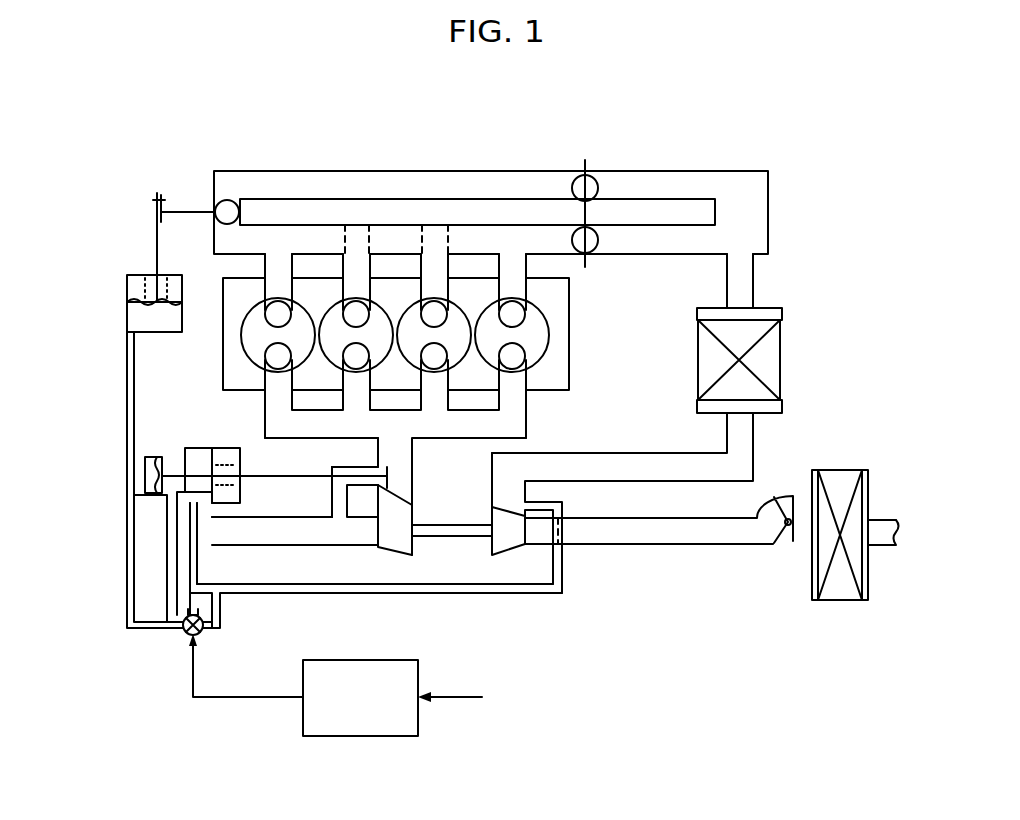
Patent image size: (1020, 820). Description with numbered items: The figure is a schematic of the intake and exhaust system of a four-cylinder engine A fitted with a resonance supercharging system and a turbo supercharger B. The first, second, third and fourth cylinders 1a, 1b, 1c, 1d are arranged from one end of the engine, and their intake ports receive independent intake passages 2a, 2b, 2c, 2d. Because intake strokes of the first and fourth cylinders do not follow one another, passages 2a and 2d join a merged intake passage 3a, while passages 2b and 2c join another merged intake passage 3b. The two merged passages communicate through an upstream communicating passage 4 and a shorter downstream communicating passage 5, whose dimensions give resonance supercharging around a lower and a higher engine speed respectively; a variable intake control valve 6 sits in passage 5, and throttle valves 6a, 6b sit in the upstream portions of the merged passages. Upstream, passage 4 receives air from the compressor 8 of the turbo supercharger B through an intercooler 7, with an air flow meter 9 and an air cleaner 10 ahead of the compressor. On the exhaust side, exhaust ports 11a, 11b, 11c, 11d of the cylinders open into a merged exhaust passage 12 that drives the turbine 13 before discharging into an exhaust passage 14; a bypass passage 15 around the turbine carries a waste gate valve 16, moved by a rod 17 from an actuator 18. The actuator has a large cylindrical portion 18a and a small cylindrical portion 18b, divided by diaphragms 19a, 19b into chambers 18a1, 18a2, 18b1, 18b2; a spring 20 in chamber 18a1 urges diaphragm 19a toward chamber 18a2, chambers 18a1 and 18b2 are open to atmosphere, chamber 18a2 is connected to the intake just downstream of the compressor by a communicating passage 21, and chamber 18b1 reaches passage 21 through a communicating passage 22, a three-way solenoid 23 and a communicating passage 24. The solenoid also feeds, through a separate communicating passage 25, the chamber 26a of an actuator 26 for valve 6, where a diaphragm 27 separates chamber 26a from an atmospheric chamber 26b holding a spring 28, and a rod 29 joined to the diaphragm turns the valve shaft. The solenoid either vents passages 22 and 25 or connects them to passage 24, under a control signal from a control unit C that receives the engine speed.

The four-cylinder engine A is at (462, 172).
The turbo supercharger B is at (468, 543).
The control unit C is at (357, 737).
The first cylinder 1a is at (260, 336).
The second cylinder 1b is at (338, 336).
The third cylinder 1c is at (416, 336).
The fourth cylinder 1d is at (494, 336).
The independent intake passage 2a is at (277, 267).
The independent intake passage 2b is at (355, 267).
The independent intake passage 2c is at (433, 267).
The independent intake passage 2d is at (511, 267).
The merged intake passage 3a is at (390, 233).
The merged intake passage 3b is at (383, 180).
The upstream communicating passage 4 is at (660, 240).
The downstream communicating passage 5 is at (214, 234).
The variable intake control valve 6 is at (232, 203).
The throttle valve 6a is at (188, 212).
The throttle valve 6b is at (590, 251).
The intercooler 7 is at (767, 350).
The compressor 8 is at (512, 537).
The air flow meter 9 is at (790, 540).
The air cleaner 10 is at (835, 480).
The exhaust port of first cylinder 11a is at (272, 402).
The exhaust port of second cylinder 11b is at (342, 400).
The exhaust port of third cylinder 11c is at (470, 416).
The exhaust port of fourth cylinder 11d is at (517, 403).
The merged exhaust passage 12 is at (458, 440).
The turbine 13 is at (403, 542).
The exhaust passage 14 is at (313, 531).
The bypass passage 15 is at (352, 470).
The waste gate valve 16 is at (392, 478).
The rod 17 is at (300, 477).
The actuator 18 is at (172, 452).
The large cylindrical portion 18a is at (220, 448).
The chamber 18a1 is at (262, 492).
The chamber 18a2 is at (195, 448).
The small cylindrical portion 18b is at (157, 457).
The chamber 18b1 is at (170, 487).
The chamber 18b2 is at (145, 468).
The diaphragm 19a is at (175, 510).
The diaphragm 19b is at (148, 483).
The spring 20 is at (237, 494).
The communicating passage 21 is at (482, 596).
The communicating passage 22 is at (170, 598).
The three-way solenoid 23 is at (185, 633).
The communicating passage 24 is at (225, 603).
The communicating passage 25 is at (125, 380).
The diaphragm actuator 26 is at (122, 300).
The chamber 26a is at (156, 318).
The chamber 26b is at (135, 285).
The diaphragm 27 is at (142, 308).
The spring 28 is at (143, 282).
The rod 29 is at (155, 205).